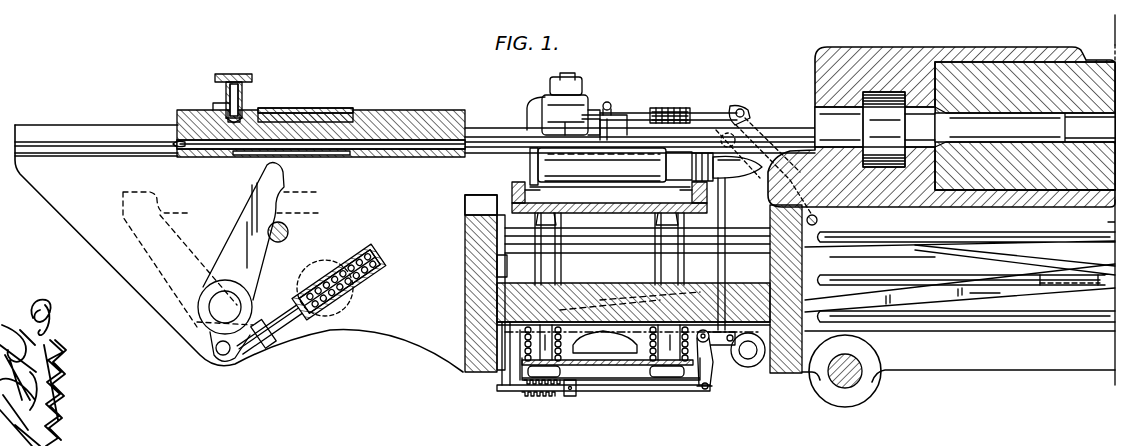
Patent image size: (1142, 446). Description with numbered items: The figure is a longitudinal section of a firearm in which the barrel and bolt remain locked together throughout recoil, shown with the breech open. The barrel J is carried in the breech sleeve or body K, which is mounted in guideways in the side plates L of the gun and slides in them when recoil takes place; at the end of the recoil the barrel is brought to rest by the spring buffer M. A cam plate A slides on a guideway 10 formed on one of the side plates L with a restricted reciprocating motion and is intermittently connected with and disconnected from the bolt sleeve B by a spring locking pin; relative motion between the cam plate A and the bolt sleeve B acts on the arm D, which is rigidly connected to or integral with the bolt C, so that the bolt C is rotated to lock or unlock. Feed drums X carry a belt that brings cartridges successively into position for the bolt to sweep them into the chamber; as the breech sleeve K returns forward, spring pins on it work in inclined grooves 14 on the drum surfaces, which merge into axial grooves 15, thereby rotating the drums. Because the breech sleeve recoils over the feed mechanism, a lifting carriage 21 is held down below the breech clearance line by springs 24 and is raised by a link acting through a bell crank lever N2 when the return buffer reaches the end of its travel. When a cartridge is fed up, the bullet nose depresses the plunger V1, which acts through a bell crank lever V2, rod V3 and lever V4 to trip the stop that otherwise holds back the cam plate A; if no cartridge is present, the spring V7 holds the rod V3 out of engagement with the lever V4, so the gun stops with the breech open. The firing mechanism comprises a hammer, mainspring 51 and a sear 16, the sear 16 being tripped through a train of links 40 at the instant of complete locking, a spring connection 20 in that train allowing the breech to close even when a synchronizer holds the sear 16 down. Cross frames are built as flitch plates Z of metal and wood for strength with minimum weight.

The cam plate A is at (250, 80).
The bolt sleeve B is at (318, 108).
The bolt C is at (425, 112).
The arm D is at (244, 104).
The barrel J is at (1100, 62).
The breech sleeve or body K is at (935, 55).
The side plate L is at (357, 322).
The spring buffer M is at (235, 212).
The feed drum X is at (1077, 222).
The flitch plate Z is at (465, 223).
The guideway 10 is at (1100, 240).
The inclined grooves 14 is at (958, 243).
The axial grooves 15 is at (1100, 311).
The sear 16 is at (590, 118).
The spring connection 20 is at (665, 107).
The lifting carriage 21 is at (637, 249).
The springs 24 is at (653, 341).
The train of links 40 is at (708, 110).
The mainspring 51 is at (530, 103).
The plunger V1 is at (727, 207).
The bell crank lever V2 is at (711, 380).
The rod V3 is at (640, 383).
The lever V4 is at (465, 249).
The spring V7 is at (546, 394).
The bell crank lever N2 is at (748, 372).